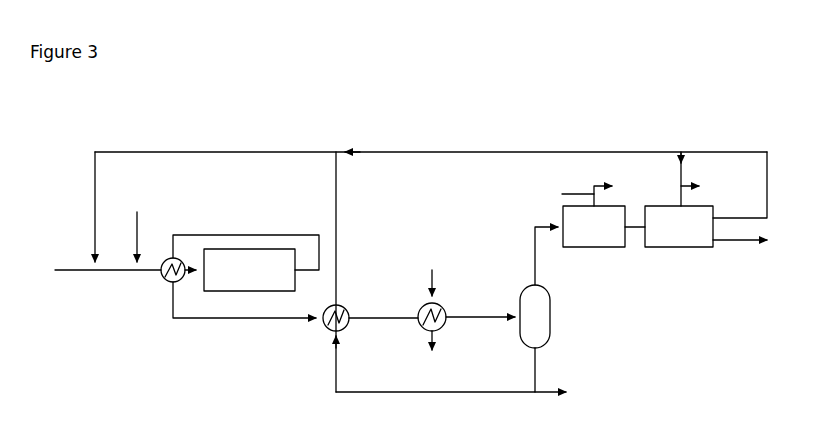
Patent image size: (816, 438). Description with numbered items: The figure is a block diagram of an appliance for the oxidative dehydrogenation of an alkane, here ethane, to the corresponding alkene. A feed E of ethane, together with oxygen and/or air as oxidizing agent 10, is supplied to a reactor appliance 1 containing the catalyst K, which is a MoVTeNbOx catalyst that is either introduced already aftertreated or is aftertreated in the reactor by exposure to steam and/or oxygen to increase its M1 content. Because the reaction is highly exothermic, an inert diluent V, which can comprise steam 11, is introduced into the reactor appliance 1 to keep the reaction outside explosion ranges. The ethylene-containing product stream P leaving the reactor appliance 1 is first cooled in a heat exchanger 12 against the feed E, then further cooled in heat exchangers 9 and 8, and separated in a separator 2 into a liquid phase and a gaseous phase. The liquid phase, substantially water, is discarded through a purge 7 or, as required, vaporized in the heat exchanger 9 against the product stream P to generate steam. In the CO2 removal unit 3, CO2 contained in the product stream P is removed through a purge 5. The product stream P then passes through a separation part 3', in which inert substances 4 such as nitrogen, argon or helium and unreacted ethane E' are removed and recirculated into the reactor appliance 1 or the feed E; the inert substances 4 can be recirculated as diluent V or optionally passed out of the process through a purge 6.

The reactor appliance 1 is at (264, 281).
The separator 2 is at (502, 287).
The CO2 removal unit 3 is at (604, 226).
The separation part 3' is at (679, 226).
The inert substances 4 is at (677, 168).
The purge 5 is at (575, 192).
The purge 6 is at (697, 187).
The purge 7 is at (459, 382).
The heat exchanger 8 is at (420, 304).
The heat exchanger 9 is at (325, 331).
The oxidizing agent 10 is at (134, 226).
The steam 11 is at (197, 152).
The heat exchanger 12 is at (166, 281).
The feed E is at (101, 216).
The ethane E' is at (740, 185).
The product stream P is at (748, 244).
The diluent V is at (240, 152).
The catalyst K is at (264, 281).